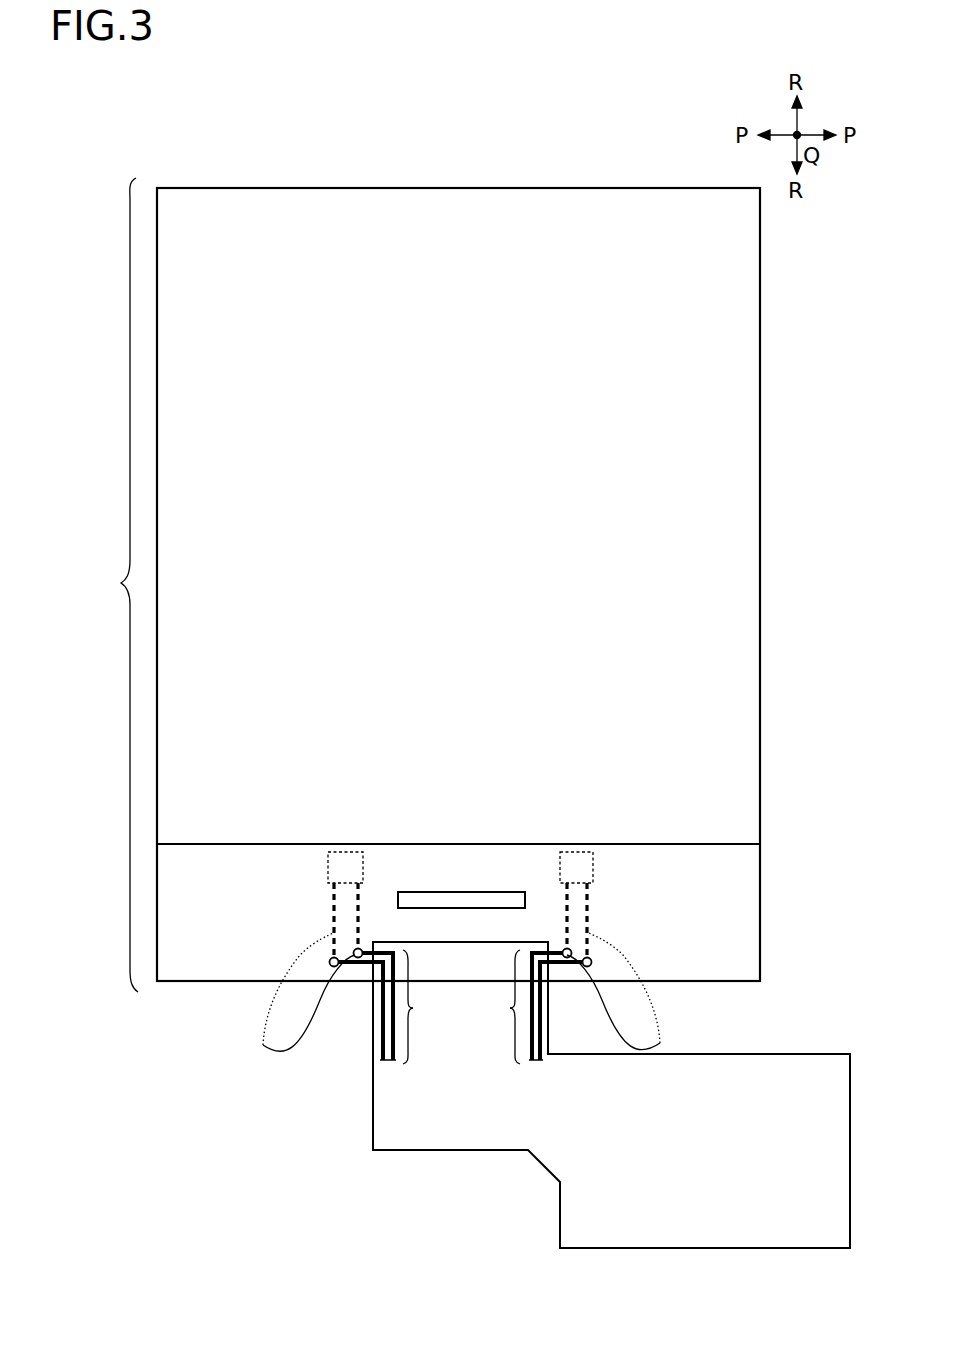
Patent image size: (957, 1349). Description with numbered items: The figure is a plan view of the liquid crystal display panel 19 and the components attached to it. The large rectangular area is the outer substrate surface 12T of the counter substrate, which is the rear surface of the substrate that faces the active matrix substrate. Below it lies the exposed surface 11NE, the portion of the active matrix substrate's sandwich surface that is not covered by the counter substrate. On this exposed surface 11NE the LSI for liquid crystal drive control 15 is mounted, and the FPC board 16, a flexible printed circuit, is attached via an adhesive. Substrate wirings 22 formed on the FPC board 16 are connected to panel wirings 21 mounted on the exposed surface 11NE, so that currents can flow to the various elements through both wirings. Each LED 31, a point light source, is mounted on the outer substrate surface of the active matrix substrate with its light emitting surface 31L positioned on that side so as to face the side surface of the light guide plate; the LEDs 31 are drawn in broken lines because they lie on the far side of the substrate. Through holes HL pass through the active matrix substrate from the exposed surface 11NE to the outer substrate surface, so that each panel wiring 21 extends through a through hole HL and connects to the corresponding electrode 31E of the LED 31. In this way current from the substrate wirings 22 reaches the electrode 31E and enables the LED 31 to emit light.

The liquid crystal display panel 19 is at (112, 585).
The outer substrate surface 12T is at (458, 584).
The exposed surface 11NE is at (742, 863).
The light emitting surface 31L is at (340, 852).
The LED 31 is at (464, 905).
The electrode 31E is at (358, 882).
The LSI for liquid crystal drive control 15 is at (482, 898).
The through hole HL is at (334, 967).
The substrate wiring 22 is at (460, 1007).
The panel wiring 21 is at (466, 997).
The FPC board 16 is at (611, 1095).